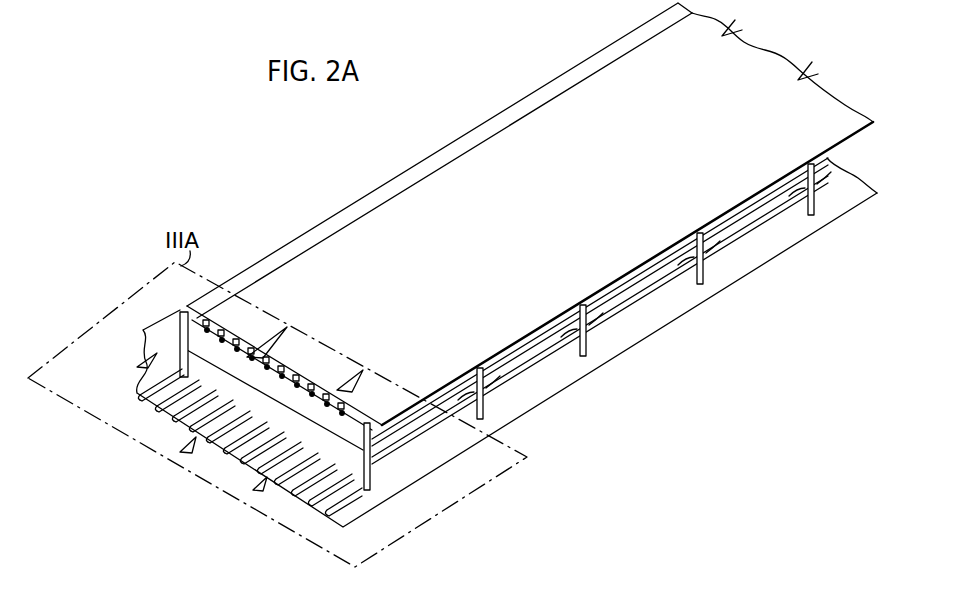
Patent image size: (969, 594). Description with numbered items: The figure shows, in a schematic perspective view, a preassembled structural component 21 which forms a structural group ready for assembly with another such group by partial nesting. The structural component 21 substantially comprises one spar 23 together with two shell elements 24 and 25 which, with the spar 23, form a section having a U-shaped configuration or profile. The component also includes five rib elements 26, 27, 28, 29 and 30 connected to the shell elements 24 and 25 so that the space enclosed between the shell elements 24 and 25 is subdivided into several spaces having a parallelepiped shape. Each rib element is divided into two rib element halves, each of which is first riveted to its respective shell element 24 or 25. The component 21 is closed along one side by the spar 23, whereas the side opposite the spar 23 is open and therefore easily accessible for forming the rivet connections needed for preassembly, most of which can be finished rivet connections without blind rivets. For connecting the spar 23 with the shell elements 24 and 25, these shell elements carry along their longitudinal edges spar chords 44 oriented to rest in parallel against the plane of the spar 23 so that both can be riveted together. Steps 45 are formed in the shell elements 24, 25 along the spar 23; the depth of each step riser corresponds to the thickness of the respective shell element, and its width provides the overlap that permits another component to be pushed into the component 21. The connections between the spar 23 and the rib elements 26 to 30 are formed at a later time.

The structural component 21 is at (818, 74).
The spar 23 is at (167, 322).
The shell element 24 is at (293, 497).
The shell element 25 is at (420, 200).
The rib element 26 is at (373, 468).
The rib element 27 is at (483, 410).
The rib element 28 is at (587, 348).
The rib element 29 is at (703, 262).
The rib element 30 is at (815, 198).
The spar chord 44 is at (200, 303).
The step 45 is at (557, 83).